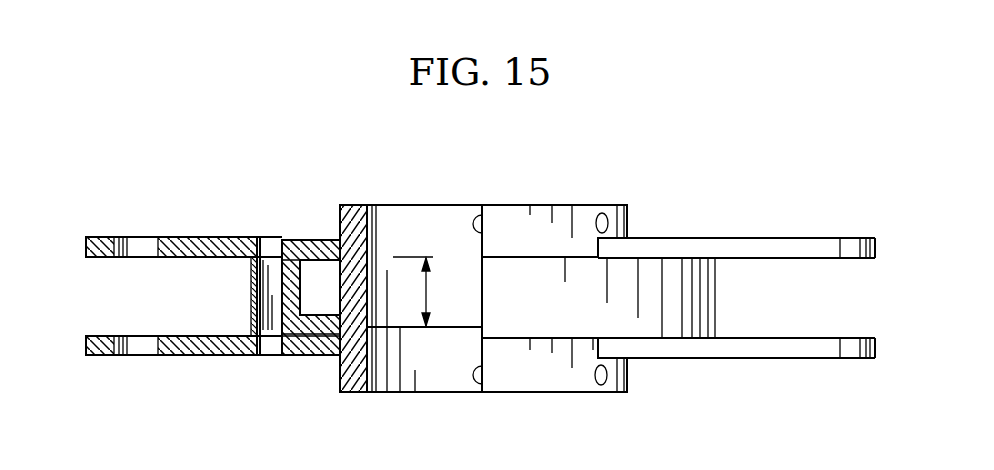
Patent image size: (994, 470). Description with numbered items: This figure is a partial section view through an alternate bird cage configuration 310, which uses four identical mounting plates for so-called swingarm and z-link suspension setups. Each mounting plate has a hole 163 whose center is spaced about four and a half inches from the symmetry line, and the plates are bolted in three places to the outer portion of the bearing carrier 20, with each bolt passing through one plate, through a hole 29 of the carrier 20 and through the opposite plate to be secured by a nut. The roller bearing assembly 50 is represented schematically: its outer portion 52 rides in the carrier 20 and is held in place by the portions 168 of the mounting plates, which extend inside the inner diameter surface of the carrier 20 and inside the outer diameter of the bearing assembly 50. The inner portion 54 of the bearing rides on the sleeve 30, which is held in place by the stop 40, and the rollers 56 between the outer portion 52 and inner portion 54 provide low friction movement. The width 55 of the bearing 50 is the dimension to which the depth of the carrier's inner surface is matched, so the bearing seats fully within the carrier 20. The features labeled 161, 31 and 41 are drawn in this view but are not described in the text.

The hole 163 is at (139, 238).
The ring 161 is at (264, 238).
The hole 29 is at (256, 279).
The outer portion 52 is at (297, 240).
The portions of plates 168 is at (312, 245).
The rollers 56 is at (327, 282).
The roller bearing assembly 50 is at (286, 357).
The bearing carrier 20 is at (332, 357).
The sleeve 30 is at (355, 205).
The stop 40 is at (357, 393).
The bird cage configuration 310 is at (500, 180).
The upper chamber port 31 is at (470, 226).
The lower chamber port 41 is at (470, 374).
The inner portion 54 is at (367, 284).
The width 55 is at (428, 291).